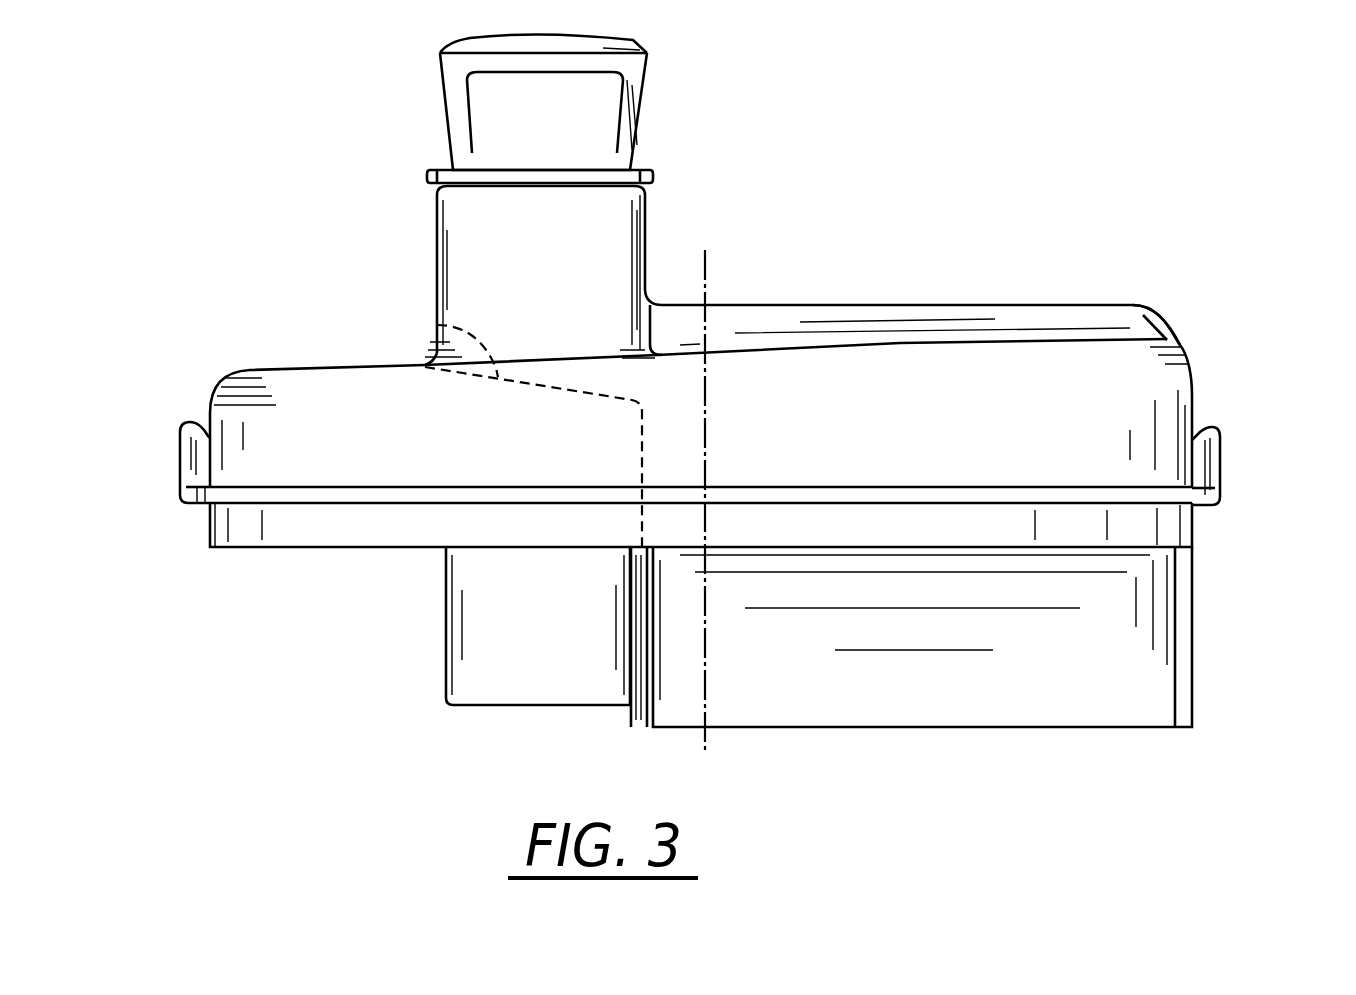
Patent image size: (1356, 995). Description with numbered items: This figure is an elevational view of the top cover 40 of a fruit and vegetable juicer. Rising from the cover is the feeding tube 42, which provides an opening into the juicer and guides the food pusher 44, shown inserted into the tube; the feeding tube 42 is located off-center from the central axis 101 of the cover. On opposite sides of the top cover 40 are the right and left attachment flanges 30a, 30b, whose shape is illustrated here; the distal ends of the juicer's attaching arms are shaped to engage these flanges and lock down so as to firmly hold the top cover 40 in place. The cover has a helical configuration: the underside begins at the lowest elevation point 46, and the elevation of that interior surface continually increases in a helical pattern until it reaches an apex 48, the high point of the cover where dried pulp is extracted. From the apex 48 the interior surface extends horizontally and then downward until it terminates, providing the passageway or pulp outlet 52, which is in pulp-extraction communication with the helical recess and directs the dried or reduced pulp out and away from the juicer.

The right attachment flange 30a is at (180, 452).
The left attachment flange 30b is at (1220, 433).
The top cover 40 is at (227, 384).
The feeding tube 42 is at (437, 234).
The food pusher 44 is at (562, 121).
The lowest elevation point 46 is at (437, 325).
The apex 48 is at (1163, 323).
The pulp outlet 52 is at (1027, 687).
The central axis 101 is at (707, 273).